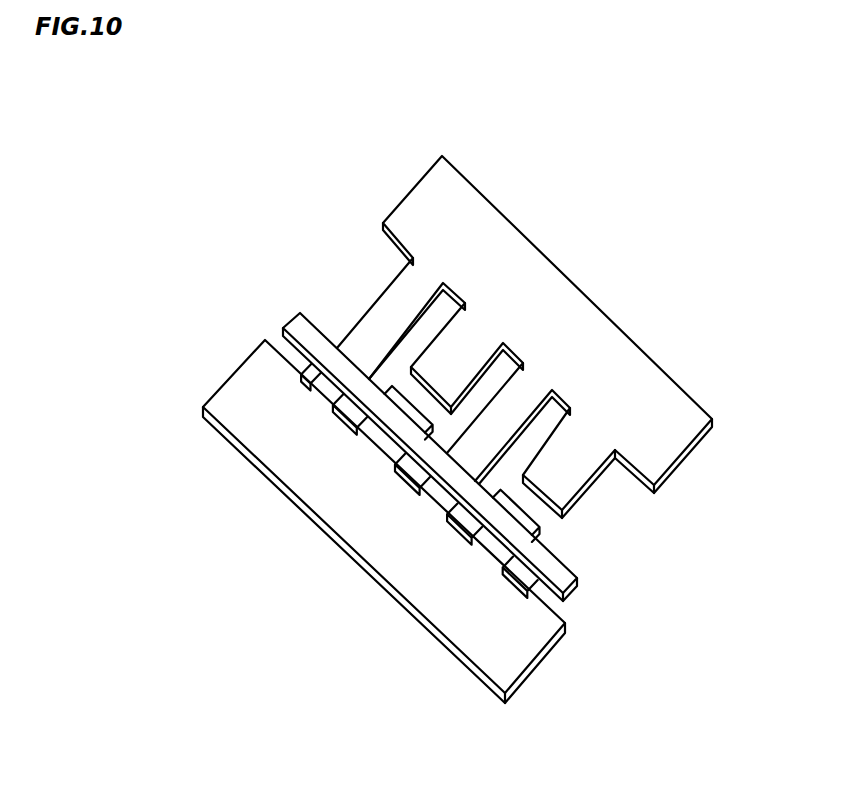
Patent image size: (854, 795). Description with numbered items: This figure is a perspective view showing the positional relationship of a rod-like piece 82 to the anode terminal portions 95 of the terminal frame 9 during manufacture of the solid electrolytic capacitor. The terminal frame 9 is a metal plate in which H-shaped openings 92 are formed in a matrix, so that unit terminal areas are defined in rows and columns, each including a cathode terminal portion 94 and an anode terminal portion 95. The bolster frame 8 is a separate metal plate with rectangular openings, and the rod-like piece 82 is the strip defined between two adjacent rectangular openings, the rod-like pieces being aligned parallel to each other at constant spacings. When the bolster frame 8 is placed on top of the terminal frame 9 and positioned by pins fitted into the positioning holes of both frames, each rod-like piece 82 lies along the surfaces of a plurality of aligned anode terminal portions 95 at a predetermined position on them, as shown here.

The terminal frame 9 is at (433, 208).
The bolster frame 8 is at (384, 457).
The rod-like piece 82 is at (315, 330).
The H-shaped opening 92 is at (498, 392).
The cathode terminal portion 94 is at (568, 462).
The anode terminal portion 95 is at (525, 515).